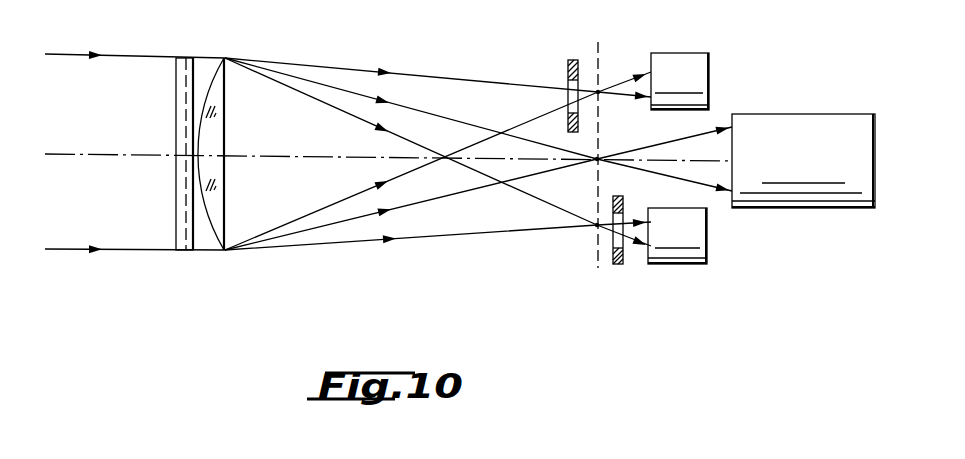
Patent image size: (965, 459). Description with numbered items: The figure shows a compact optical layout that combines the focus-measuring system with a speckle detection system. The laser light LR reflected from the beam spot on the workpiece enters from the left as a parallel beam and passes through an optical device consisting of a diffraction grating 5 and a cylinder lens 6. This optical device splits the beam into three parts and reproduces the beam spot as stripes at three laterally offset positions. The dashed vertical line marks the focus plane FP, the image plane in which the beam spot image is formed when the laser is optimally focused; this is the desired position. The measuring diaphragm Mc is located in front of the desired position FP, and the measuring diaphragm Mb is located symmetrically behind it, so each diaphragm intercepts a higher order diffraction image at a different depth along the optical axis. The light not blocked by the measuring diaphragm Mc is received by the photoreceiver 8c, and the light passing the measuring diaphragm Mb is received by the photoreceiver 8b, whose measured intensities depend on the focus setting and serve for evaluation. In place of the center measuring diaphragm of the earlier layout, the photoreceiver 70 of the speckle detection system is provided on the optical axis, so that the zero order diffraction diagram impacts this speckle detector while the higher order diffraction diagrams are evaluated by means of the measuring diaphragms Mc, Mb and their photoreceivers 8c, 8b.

The reflected laser light LR is at (132, 57).
The diffraction grating 5 is at (173, 238).
The cylinder lens 6 is at (221, 230).
The focus plane FP is at (596, 262).
The measuring diaphragm Mc is at (571, 58).
The measuring diaphragm Mb is at (620, 266).
The photoreceiver 8c is at (703, 65).
The photoreceiver 8b is at (698, 240).
The photoreceiver of the speckle detection system 70 is at (865, 165).